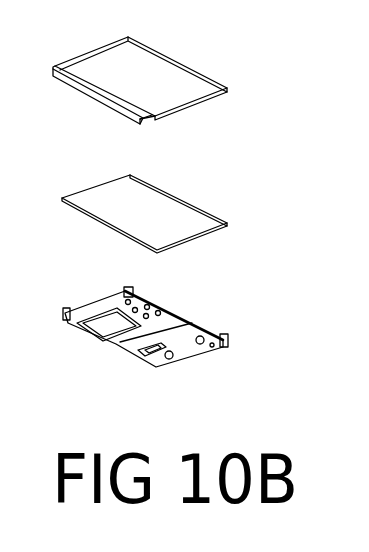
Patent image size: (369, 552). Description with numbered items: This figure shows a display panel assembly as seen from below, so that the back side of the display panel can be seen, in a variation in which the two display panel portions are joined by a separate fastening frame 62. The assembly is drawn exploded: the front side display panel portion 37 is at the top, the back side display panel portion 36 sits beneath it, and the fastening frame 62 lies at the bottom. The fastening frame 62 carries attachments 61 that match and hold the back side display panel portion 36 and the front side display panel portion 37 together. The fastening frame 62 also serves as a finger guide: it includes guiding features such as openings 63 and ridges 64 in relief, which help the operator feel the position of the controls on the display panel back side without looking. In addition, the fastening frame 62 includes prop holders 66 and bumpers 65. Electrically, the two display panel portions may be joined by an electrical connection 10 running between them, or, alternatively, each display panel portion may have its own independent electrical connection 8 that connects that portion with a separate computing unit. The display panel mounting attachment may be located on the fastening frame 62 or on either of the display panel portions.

The independent electrical connection 8 is at (90, 98).
The electrical connection 10 is at (113, 92).
The back side display panel portion 36 is at (192, 198).
The front side display panel portion 37 is at (195, 70).
The attachments 61 is at (222, 332).
The fastening frame 62 is at (193, 358).
The openings 63 is at (108, 325).
The ridges 64 is at (117, 341).
The bumpers 65 is at (127, 298).
The prop holders 66 is at (115, 345).